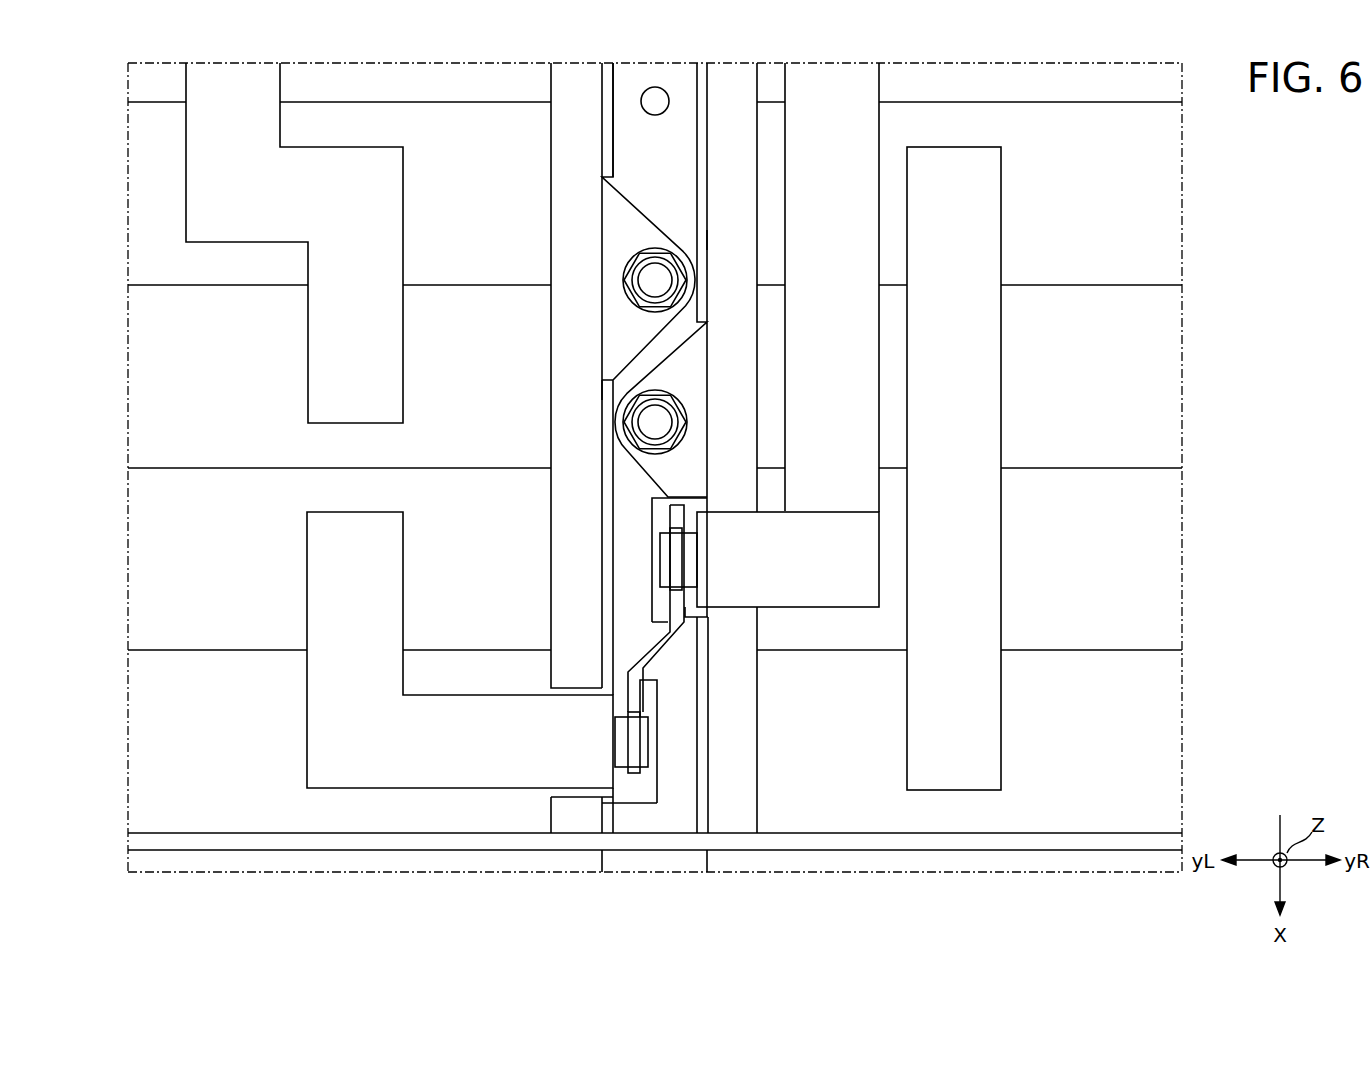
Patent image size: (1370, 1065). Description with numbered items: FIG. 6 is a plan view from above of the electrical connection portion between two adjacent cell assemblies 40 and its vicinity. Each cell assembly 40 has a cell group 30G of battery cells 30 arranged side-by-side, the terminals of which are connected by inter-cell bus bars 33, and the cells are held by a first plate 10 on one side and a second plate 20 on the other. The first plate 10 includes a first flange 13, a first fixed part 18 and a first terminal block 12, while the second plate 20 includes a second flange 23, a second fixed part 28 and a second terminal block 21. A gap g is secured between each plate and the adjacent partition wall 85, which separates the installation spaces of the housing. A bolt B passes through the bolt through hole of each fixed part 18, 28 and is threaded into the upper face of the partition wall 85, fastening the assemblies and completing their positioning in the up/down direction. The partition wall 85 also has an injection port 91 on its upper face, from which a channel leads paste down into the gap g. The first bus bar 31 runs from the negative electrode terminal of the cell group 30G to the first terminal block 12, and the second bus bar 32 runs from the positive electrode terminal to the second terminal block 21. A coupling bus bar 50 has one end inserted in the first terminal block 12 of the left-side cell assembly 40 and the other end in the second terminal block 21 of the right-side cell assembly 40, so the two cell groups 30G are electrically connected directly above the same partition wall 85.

The first plate 10 is at (577, 822).
The first terminal block 12 is at (660, 780).
The first flange 13 is at (548, 554).
The first fixed part 18 is at (618, 222).
The second plate 20 is at (732, 822).
The second terminal block 21 is at (650, 510).
The second flange 23 is at (760, 750).
The second fixed part 28 is at (688, 467).
The battery cell 30 is at (188, 437).
The cell group 30G is at (143, 232).
The first bus bar 31 is at (325, 555).
The second bus bar 32 is at (830, 585).
The inter-cell bus bar 33 is at (325, 358).
The cell assembly 40 is at (143, 186).
The coupling bus bar 50 is at (648, 660).
The partition wall 85 is at (632, 83).
The injection port 91 is at (655, 101).
The bolt B is at (655, 278).
The gap g is at (705, 240).